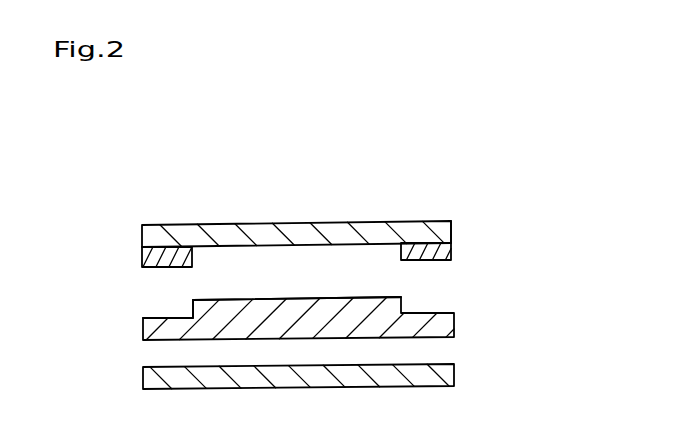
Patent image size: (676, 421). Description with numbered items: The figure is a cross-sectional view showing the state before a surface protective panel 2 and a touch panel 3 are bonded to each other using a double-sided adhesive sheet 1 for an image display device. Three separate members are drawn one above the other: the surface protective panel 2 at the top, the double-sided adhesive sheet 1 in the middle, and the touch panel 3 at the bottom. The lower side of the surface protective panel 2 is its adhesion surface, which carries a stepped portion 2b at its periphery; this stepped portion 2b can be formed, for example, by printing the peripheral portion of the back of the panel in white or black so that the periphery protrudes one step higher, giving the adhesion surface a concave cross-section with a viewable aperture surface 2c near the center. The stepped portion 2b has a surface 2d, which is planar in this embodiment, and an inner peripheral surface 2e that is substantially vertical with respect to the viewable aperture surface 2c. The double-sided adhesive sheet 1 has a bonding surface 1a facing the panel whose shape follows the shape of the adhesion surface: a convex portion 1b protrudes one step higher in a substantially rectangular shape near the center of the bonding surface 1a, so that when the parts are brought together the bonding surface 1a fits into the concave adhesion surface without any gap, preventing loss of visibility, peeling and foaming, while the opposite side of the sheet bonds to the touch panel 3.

The double-sided adhesive sheet 1 is at (301, 298).
The bonding surface 1a is at (177, 317).
The convex portion 1b is at (308, 297).
The surface protective panel 2 is at (306, 240).
The stepped portion 2b is at (451, 247).
The viewable aperture surface 2c is at (295, 247).
The surface of the stepped portion 2d is at (440, 260).
The inner peripheral surface 2e is at (192, 255).
The touch panel 3 is at (454, 372).